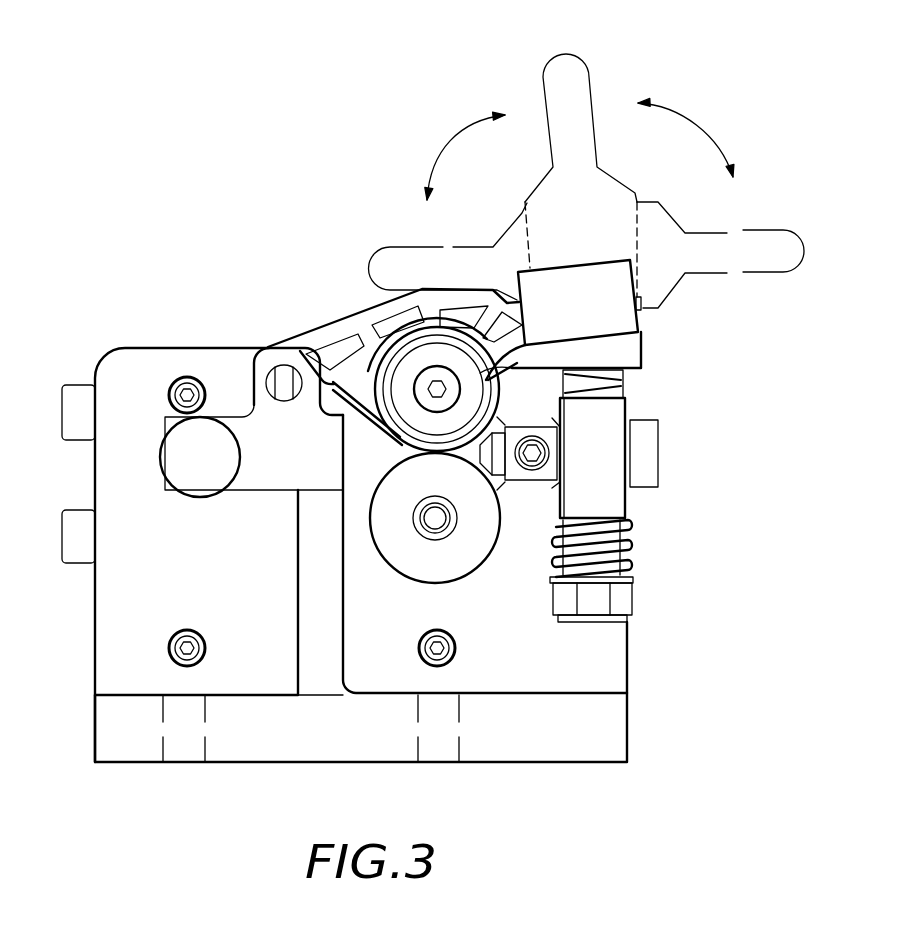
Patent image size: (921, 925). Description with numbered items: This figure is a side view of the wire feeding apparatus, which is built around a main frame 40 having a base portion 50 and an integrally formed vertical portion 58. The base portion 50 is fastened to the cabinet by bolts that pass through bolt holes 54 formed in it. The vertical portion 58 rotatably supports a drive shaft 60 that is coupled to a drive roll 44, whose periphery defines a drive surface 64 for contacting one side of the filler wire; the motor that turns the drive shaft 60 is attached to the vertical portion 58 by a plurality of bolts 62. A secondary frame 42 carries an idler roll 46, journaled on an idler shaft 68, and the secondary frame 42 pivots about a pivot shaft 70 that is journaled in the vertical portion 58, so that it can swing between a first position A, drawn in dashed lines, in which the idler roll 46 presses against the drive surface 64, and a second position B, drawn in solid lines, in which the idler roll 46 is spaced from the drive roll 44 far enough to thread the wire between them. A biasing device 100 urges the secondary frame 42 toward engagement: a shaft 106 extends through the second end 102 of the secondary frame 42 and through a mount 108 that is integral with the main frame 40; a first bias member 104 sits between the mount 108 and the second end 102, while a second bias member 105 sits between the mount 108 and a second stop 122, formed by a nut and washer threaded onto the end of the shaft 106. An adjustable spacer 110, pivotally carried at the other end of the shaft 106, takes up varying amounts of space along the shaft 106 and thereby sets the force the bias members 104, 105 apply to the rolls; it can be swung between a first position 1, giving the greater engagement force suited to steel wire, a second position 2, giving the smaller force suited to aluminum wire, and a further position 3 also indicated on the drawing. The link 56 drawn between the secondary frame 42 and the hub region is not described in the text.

The first position of the adjustable spacer 1 is at (831, 248).
The second position of the adjustable spacer 2 is at (365, 262).
The lever position 3 is at (564, 33).
The main frame 40 is at (632, 660).
The secondary frame 42 is at (325, 325).
The drive roll 44 is at (441, 547).
The idler roll 46 is at (410, 338).
The base portion 50 is at (627, 728).
The bolt holes 54 is at (205, 727).
The link 56 is at (357, 388).
The vertical portion 58 is at (148, 348).
The drive shaft 60 is at (440, 538).
The bolts 62 is at (170, 388).
The drive surface 64 is at (473, 437).
The idler shaft 68 is at (418, 392).
The pivot shaft 70 is at (268, 375).
The biasing device 100 is at (783, 375).
The second end of the secondary frame 102 is at (653, 320).
The first bias member 104 is at (620, 382).
The second bias member 105 is at (630, 543).
The shaft 106 is at (620, 392).
The mount 108 is at (627, 503).
The adjustable spacer 110 is at (650, 147).
The second stop 122 is at (655, 597).
The first position of the secondary frame A is at (425, 355).
The second position of the secondary frame B is at (462, 358).